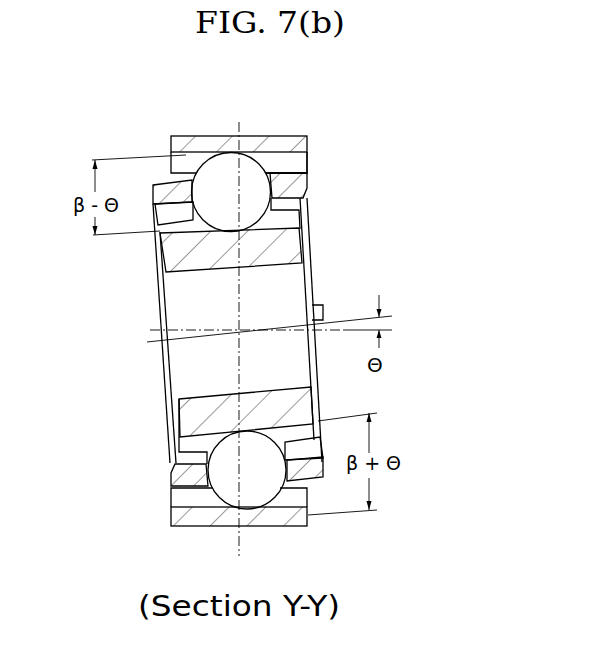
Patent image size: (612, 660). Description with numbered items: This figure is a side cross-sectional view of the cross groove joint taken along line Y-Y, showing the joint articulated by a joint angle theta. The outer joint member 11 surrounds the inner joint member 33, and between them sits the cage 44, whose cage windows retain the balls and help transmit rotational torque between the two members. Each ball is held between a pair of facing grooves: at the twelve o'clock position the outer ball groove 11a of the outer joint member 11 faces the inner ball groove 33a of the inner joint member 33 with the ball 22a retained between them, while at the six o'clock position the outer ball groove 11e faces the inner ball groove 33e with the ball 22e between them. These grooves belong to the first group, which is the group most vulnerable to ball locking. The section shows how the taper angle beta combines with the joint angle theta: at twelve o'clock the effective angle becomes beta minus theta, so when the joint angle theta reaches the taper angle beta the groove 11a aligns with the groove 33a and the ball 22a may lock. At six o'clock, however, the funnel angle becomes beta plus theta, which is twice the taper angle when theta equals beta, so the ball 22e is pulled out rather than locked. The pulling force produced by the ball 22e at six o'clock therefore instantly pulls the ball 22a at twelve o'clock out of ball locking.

The outer joint member 11 is at (296, 150).
The outer ball groove 11a is at (292, 166).
The outer ball groove 11e is at (190, 497).
The ball 22a is at (221, 172).
The ball 22e is at (222, 457).
The inner joint member 33 is at (288, 252).
The inner ball groove 33a is at (287, 212).
The inner ball groove 33e is at (195, 447).
The cage 44 is at (309, 194).